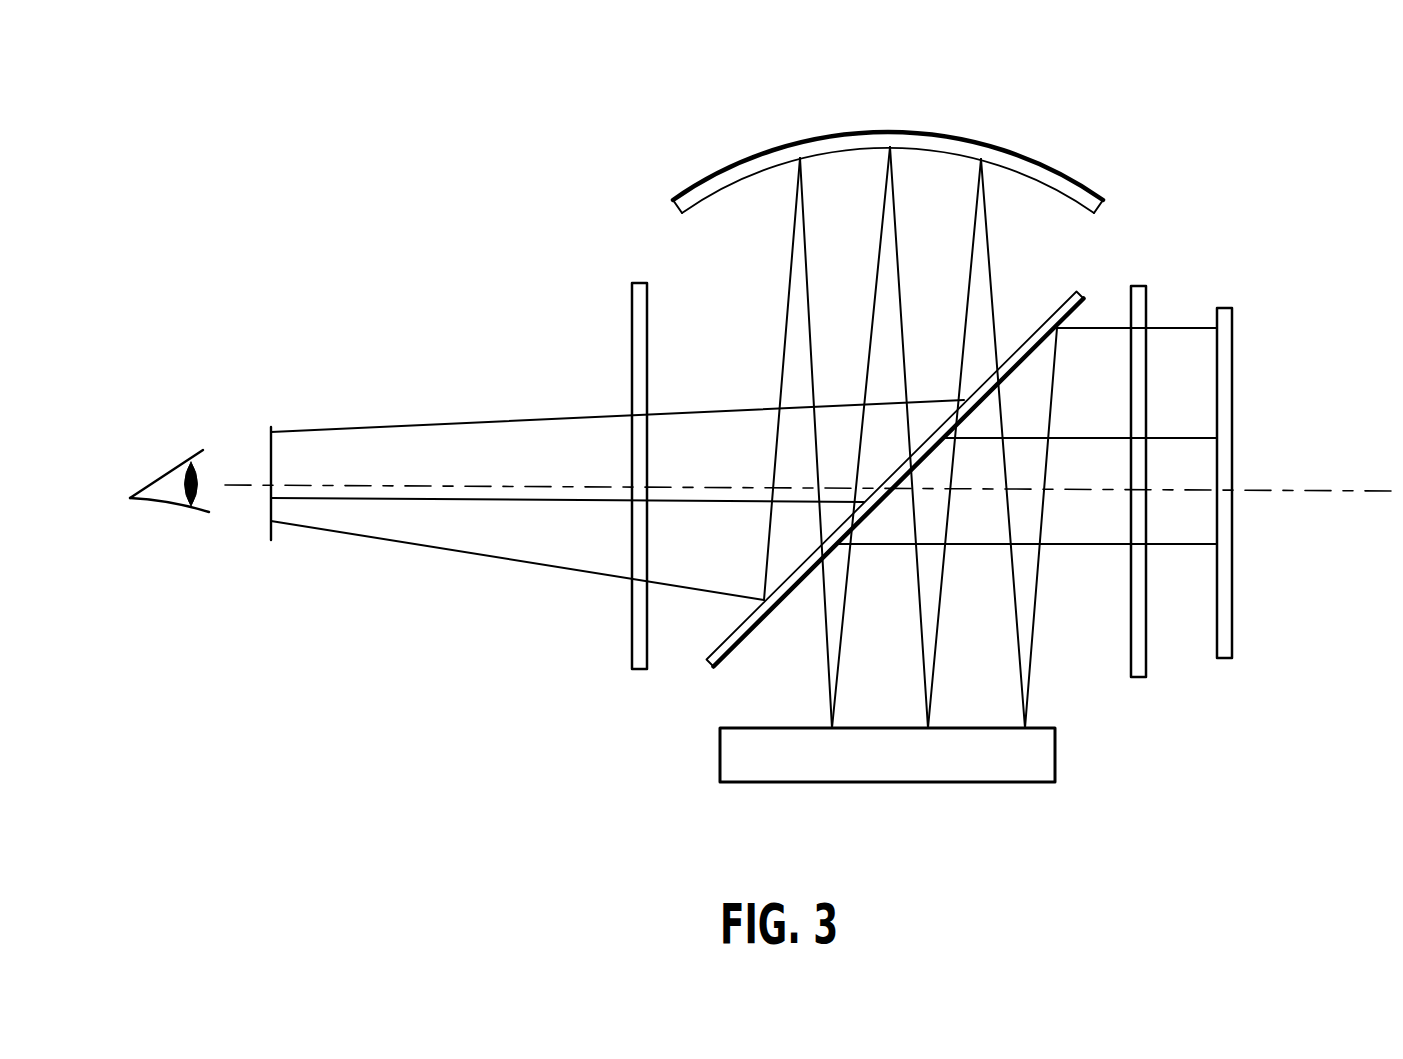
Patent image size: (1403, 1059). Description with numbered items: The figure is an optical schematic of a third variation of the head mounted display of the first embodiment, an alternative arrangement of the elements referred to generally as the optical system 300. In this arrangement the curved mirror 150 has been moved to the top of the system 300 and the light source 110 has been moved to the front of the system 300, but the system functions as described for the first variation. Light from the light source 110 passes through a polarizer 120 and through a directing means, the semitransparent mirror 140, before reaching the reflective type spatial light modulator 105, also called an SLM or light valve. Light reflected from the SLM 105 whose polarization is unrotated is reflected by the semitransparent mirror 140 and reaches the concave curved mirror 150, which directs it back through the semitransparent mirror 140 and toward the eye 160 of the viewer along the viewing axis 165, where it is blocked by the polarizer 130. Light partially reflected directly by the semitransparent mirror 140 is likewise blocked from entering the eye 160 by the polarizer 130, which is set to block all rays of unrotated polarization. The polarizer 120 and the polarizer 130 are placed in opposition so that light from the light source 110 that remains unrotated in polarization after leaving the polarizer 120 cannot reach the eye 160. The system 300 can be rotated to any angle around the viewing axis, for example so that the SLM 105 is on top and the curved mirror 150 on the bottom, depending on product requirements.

The reflective type spatial light modulator 105 is at (872, 768).
The light source 110 is at (1223, 360).
The polarizer 120 is at (1135, 678).
The polarizer 130 is at (634, 671).
The semitransparent mirror 140 is at (1082, 296).
The curved mirror 150 is at (1062, 171).
The eye 160 is at (150, 446).
The viewing axis 165 is at (1357, 492).
The optical system 300 is at (1226, 161).